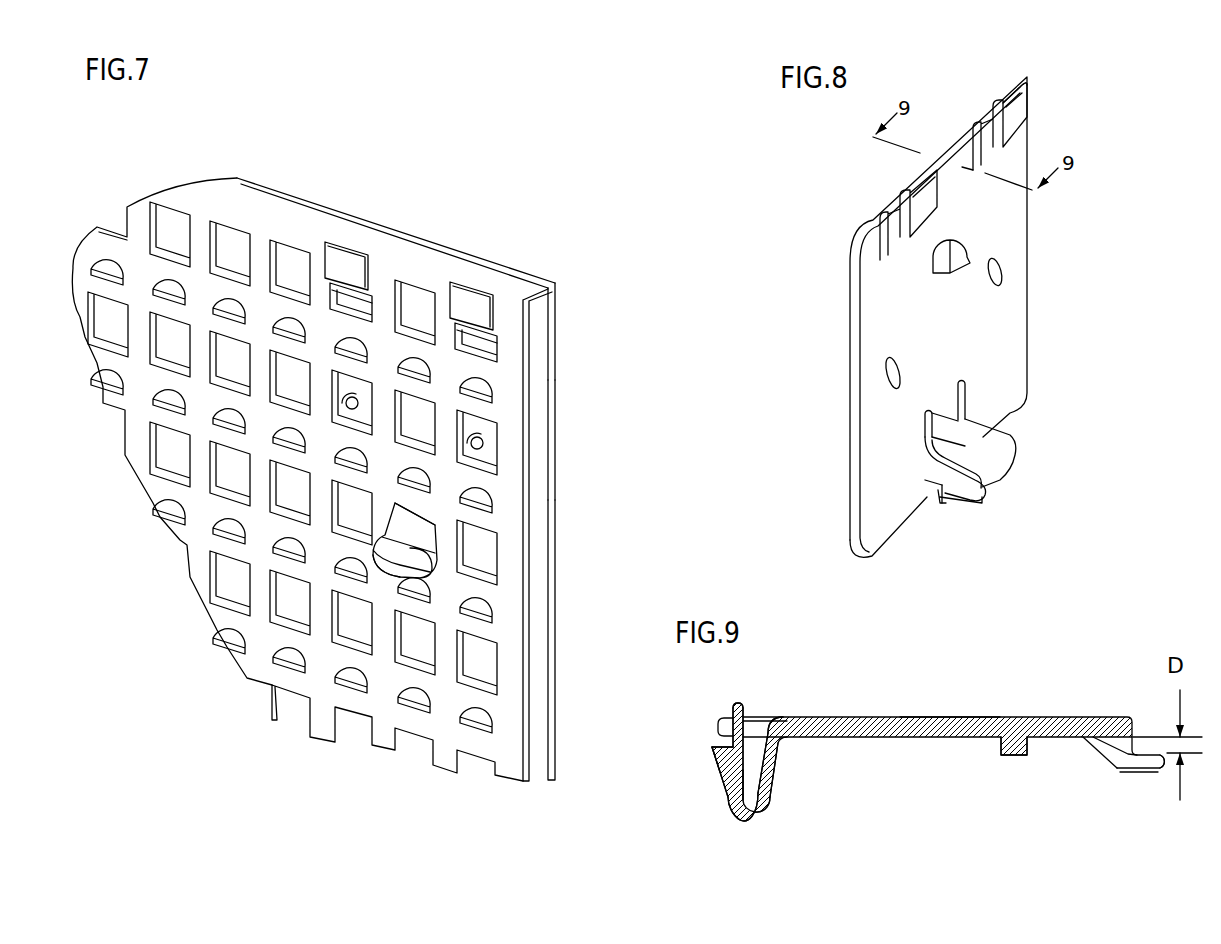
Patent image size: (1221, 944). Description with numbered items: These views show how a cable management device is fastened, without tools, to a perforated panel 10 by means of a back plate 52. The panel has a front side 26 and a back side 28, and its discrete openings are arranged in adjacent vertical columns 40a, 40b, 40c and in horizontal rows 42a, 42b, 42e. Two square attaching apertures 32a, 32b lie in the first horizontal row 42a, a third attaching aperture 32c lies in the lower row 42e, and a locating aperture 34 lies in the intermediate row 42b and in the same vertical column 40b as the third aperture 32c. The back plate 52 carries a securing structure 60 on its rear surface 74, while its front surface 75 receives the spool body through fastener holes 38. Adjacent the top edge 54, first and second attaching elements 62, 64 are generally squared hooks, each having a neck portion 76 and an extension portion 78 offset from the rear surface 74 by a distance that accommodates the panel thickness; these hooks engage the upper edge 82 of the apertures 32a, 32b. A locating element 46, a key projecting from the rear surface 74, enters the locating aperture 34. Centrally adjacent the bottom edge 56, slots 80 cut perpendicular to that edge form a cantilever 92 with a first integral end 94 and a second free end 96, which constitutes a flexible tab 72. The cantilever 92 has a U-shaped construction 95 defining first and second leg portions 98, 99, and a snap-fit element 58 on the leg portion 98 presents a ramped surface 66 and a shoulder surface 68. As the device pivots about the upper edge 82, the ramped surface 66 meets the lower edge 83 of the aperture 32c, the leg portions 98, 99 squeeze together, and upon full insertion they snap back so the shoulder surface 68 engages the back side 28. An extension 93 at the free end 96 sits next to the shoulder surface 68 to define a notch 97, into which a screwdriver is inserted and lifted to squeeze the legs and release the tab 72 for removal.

In FIG. 7, the storage panel 10 is at (137, 182).
In FIG. 7, the front side 26 is at (533, 266).
In FIG. 7, the back side 28 is at (325, 668).
In FIG. 7, the first attaching aperture 32a is at (372, 272).
In FIG. 7, the second attaching aperture 32b is at (497, 346).
In FIG. 7, the third attaching aperture 32c is at (436, 525).
In FIG. 7, the locating aperture 34 is at (415, 357).
In FIG. 8, the holes 38 is at (987, 278).
In FIG. 7, the vertical column 40a is at (482, 205).
In FIG. 7, the vertical column 40b is at (418, 188).
In FIG. 7, the vertical column 40c is at (358, 165).
In FIG. 7, the first horizontal row 42a is at (543, 352).
In FIG. 7, the horizontal row 42b is at (543, 407).
In FIG. 7, the horizontal row 42e is at (543, 573).
In FIG. 7, the locating element 46 is at (422, 373).
In FIG. 8, the locating element 46 is at (960, 252).
In FIG. 9, the locating element 46 is at (1017, 755).
In FIG. 8, the back plate 52 is at (830, 192).
In FIG. 9, the back plate 52 is at (1047, 690).
In FIG. 8, the top edge 54 is at (963, 130).
In FIG. 8, the bottom edge 56 is at (890, 538).
In FIG. 9, the snap-fit element 58 is at (712, 756).
In FIG. 8, the securing structure 60 is at (993, 251).
In FIG. 7, the first attaching element 62 is at (347, 242).
In FIG. 8, the first attaching element 62 is at (906, 193).
In FIG. 7, the second attaching element 64 is at (473, 288).
In FIG. 8, the second attaching element 64 is at (1026, 86).
In FIG. 9, the second attaching element 64 is at (1130, 773).
In FIG. 8, the ramped surface 66 is at (970, 500).
In FIG. 9, the ramped surface 66 is at (718, 772).
In FIG. 7, the shoulder surface 68 is at (408, 577).
In FIG. 8, the shoulder surface 68 is at (937, 494).
In FIG. 9, the shoulder surface 68 is at (732, 745).
In FIG. 7, the flexible tab 72 is at (392, 548).
In FIG. 8, the flexible tab 72 is at (980, 447).
In FIG. 9, the flexible tab 72 is at (737, 810).
In FIG. 8, the rear surface 74 is at (1010, 368).
In FIG. 9, the rear surface 74 is at (927, 738).
In FIG. 9, the front surface 75 is at (933, 715).
In FIG. 9, the neck portion 76 is at (1102, 758).
In FIG. 9, the extension portion 78 is at (1162, 772).
In FIG. 8, the slots 80 is at (966, 383).
In FIG. 9, the slots 80 is at (763, 725).
In FIG. 7, the upper edge 82 is at (287, 258).
In FIG. 7, the lower edge 83 is at (274, 291).
In FIG. 8, the cantilever 92 is at (998, 466).
In FIG. 9, the cantilever 92 is at (773, 803).
In FIG. 8, the extension 93 is at (940, 468).
In FIG. 9, the extension 93 is at (737, 707).
In FIG. 8, the first integral end 94 is at (942, 410).
In FIG. 9, the first integral end 94 is at (785, 738).
In FIG. 8, the U-shaped construction 95 is at (1010, 487).
In FIG. 9, the U-shaped construction 95 is at (737, 829).
In FIG. 9, the second free end 96 is at (739, 710).
In FIG. 8, the notch 97 is at (928, 483).
In FIG. 9, the notch 97 is at (720, 737).
In FIG. 9, the first leg portion 98 is at (733, 783).
In FIG. 9, the second leg portion 99 is at (778, 778).